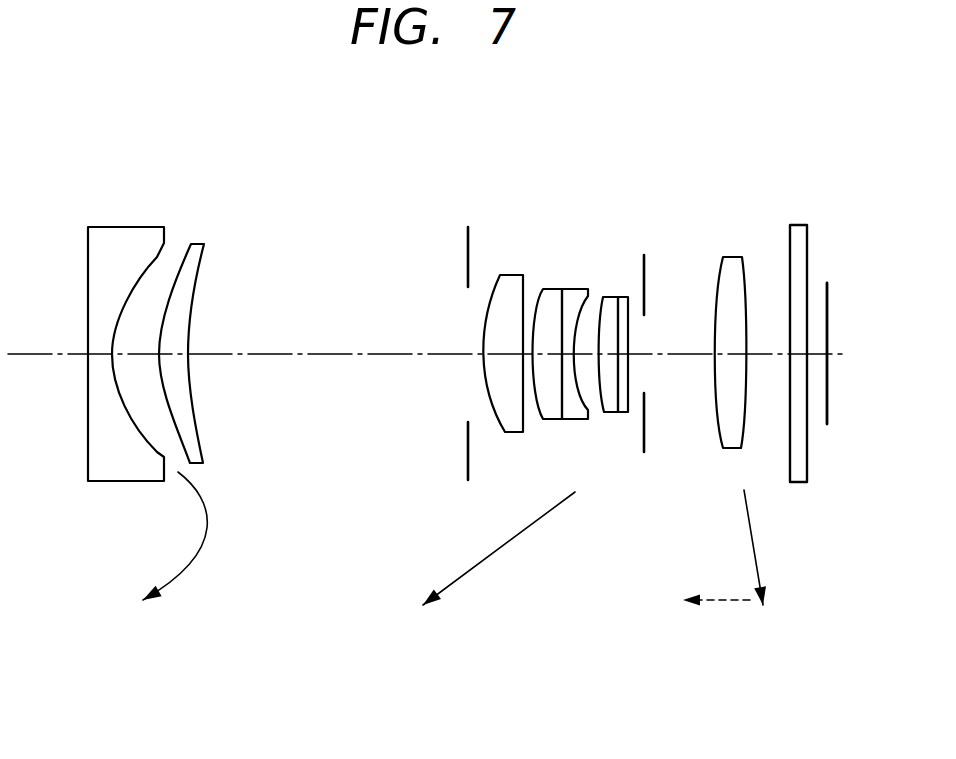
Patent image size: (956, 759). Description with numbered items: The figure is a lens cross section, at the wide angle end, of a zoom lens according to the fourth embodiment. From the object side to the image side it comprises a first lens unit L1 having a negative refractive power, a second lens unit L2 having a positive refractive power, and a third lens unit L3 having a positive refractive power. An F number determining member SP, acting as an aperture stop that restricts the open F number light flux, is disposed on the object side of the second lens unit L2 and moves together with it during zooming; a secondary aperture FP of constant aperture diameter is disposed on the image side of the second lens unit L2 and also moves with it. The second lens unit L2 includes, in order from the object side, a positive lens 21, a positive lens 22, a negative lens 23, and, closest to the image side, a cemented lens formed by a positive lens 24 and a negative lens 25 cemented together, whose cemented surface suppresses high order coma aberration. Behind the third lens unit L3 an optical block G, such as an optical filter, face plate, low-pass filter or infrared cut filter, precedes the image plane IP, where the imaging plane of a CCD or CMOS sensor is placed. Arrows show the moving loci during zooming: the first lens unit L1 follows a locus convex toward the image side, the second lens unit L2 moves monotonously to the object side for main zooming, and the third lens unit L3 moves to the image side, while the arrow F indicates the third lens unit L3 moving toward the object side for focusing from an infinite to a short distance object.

The first lens unit L1 is at (212, 160).
The second lens unit L2 is at (658, 160).
The third lens unit L3 is at (753, 160).
The positive lens 21 is at (512, 283).
The positive lens 22 is at (550, 290).
The negative lens 23 is at (575, 290).
The positive lens 24 is at (612, 297).
The negative lens 25 is at (628, 297).
The F number determining member SP is at (462, 253).
The secondary aperture FP is at (648, 273).
The optical block G is at (800, 225).
The image plane IP is at (828, 299).
The arrow F is at (720, 603).